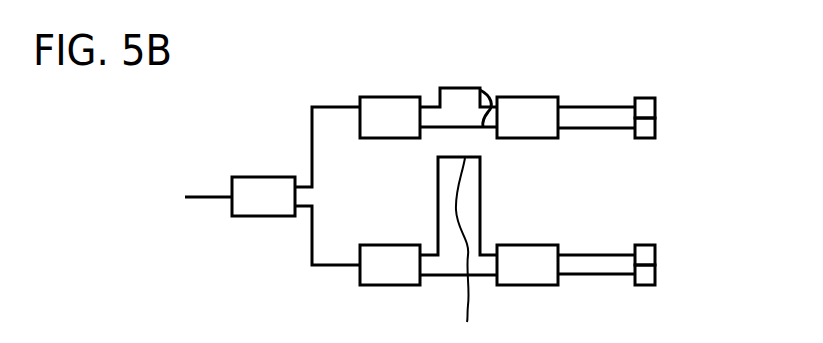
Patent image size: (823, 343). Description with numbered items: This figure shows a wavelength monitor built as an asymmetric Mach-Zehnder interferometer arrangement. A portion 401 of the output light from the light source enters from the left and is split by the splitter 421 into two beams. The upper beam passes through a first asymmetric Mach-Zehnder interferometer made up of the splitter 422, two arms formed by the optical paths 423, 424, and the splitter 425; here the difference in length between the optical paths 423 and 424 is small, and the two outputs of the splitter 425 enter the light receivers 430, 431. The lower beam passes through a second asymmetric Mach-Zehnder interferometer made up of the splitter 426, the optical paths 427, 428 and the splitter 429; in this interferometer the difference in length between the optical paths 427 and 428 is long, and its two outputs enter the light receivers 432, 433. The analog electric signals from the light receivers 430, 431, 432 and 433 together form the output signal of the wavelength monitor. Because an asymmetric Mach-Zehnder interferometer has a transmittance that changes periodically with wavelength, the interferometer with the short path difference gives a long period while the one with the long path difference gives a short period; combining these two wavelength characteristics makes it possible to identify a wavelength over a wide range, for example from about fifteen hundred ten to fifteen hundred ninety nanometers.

The portion of the output light 401 is at (212, 194).
The splitter 421 is at (262, 176).
The splitter 422 is at (387, 96).
The optical path 423 is at (450, 87).
The optical path 424 is at (481, 90).
The splitter 425 is at (533, 96).
The splitter 426 is at (390, 244).
The optical path 427 is at (425, 279).
The optical path 428 is at (469, 250).
The splitter 429 is at (532, 287).
The light receiver 430 is at (656, 100).
The light receiver 431 is at (656, 134).
The light receiver 432 is at (656, 250).
The light receiver 433 is at (656, 282).